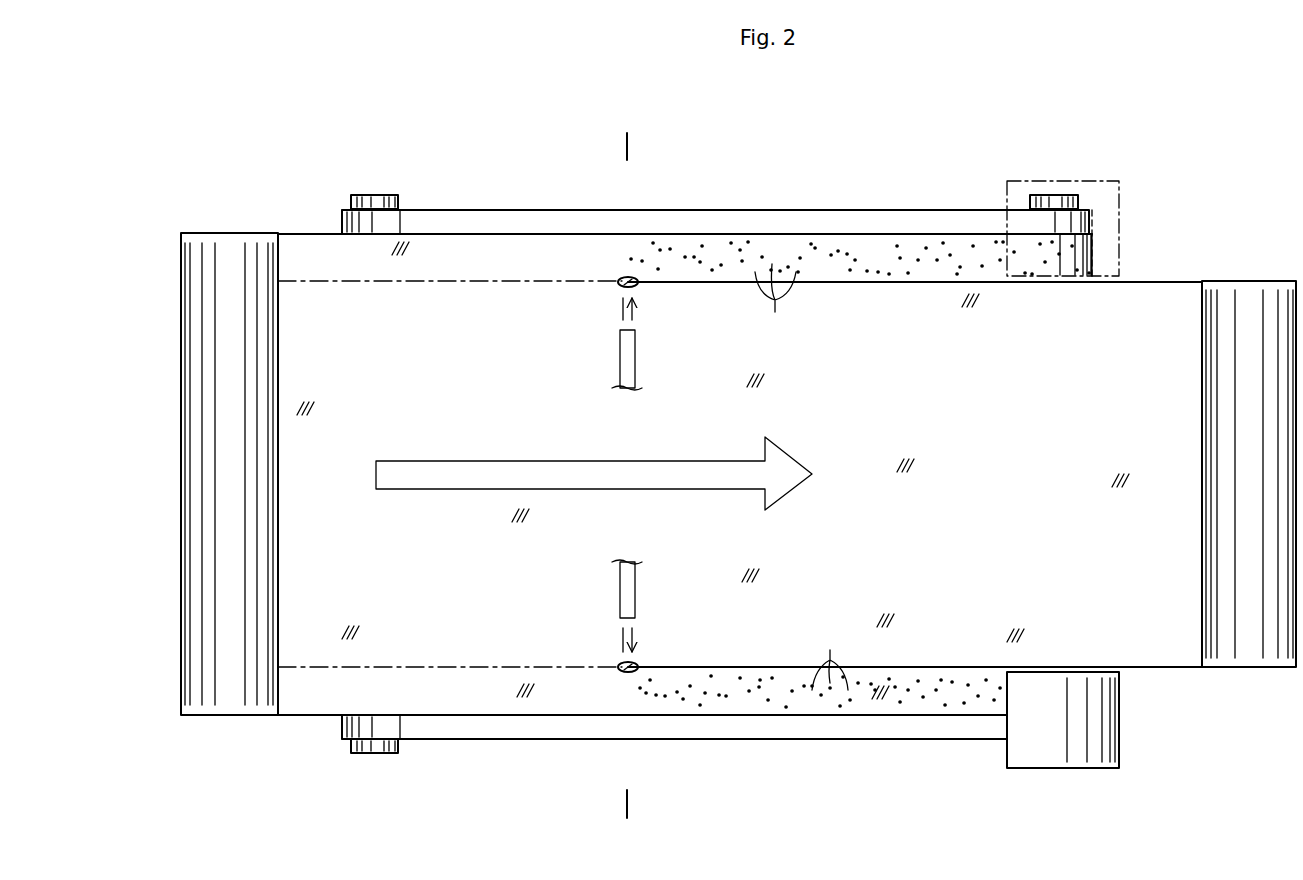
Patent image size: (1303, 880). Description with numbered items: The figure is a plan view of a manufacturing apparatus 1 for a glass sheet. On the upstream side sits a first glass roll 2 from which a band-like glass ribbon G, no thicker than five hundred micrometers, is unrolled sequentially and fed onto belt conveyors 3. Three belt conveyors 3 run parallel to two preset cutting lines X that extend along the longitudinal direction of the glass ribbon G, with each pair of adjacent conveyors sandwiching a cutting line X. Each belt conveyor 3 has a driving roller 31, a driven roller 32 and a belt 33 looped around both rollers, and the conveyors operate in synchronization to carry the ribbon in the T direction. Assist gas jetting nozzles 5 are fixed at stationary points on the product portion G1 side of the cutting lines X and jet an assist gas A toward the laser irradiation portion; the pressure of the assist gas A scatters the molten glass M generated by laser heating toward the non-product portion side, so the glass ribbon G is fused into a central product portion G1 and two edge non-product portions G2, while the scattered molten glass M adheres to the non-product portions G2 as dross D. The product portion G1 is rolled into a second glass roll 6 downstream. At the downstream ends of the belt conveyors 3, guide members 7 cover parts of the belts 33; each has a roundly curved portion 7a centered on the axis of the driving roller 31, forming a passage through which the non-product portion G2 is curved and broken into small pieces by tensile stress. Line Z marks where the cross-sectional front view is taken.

The manufacturing apparatus 1 is at (800, 139).
The first glass roll 2 is at (296, 545).
The belt conveyor 3 is at (715, 486).
The assist gas jetting nozzle 5 is at (637, 357).
The second glass roll 6 is at (1194, 548).
The guide member 7 is at (1047, 474).
The curved portion 7a is at (1107, 180).
The driving roller 31 is at (1055, 194).
The driven roller 32 is at (375, 193).
The belt 33 is at (523, 208).
The glass ribbon G is at (332, 338).
The product portion G1 is at (1163, 304).
The non-product portion G2 is at (873, 244).
The molten glass M is at (619, 288).
The assist gas A is at (639, 475).
The dross D is at (801, 477).
The preset cutting line X is at (430, 286).
The T direction T is at (594, 471).
The line Z- Z is at (622, 145).